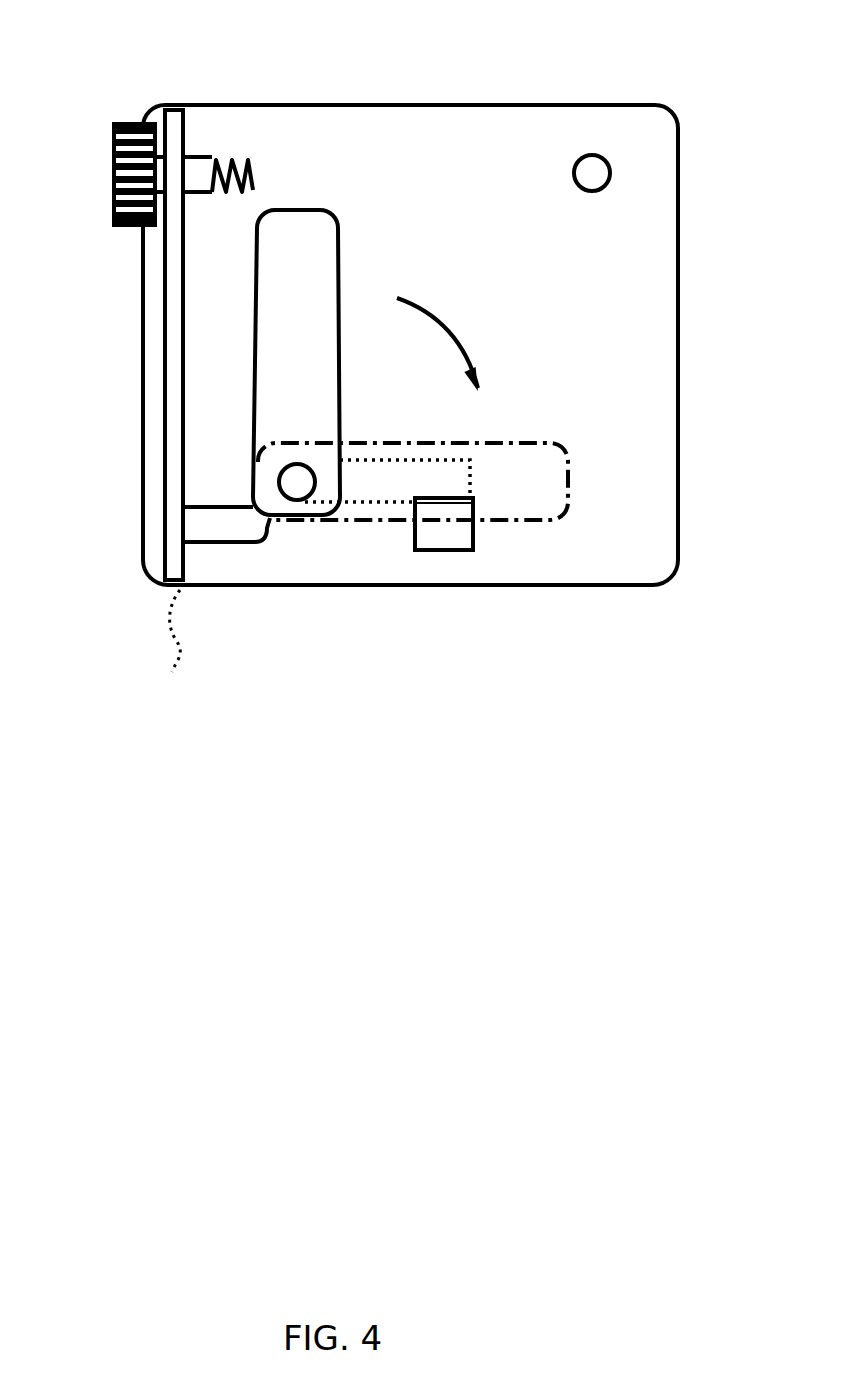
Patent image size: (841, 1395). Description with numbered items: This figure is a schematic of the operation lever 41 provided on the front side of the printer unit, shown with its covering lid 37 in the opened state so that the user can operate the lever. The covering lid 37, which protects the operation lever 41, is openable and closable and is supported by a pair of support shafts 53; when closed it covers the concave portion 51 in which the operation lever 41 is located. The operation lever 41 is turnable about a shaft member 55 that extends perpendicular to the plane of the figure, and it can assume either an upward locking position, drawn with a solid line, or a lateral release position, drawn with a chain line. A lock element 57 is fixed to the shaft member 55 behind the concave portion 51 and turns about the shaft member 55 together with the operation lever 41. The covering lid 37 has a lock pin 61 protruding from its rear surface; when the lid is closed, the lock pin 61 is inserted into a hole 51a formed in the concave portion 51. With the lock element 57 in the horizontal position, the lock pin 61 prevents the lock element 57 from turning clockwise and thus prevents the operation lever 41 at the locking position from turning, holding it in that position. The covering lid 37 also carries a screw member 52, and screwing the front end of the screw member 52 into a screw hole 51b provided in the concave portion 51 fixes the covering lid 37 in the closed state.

The covering lid 37 is at (173, 380).
The operation lever 41 is at (295, 210).
The concave portion 51 is at (677, 523).
The hole 51a is at (462, 547).
The screw hole 51b is at (601, 171).
The screw member 52 is at (128, 122).
The support shafts 53 is at (168, 104).
The shaft member 55 is at (295, 490).
The lock element 57 is at (377, 510).
The lock pin 61 is at (228, 533).